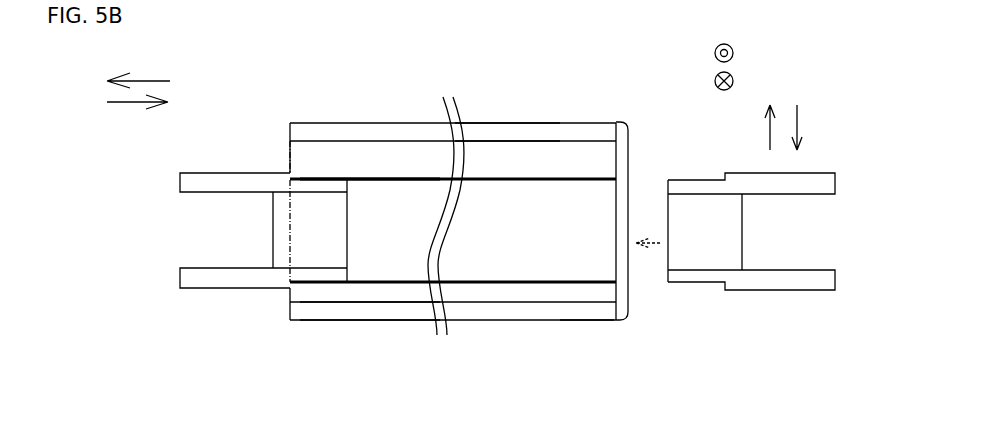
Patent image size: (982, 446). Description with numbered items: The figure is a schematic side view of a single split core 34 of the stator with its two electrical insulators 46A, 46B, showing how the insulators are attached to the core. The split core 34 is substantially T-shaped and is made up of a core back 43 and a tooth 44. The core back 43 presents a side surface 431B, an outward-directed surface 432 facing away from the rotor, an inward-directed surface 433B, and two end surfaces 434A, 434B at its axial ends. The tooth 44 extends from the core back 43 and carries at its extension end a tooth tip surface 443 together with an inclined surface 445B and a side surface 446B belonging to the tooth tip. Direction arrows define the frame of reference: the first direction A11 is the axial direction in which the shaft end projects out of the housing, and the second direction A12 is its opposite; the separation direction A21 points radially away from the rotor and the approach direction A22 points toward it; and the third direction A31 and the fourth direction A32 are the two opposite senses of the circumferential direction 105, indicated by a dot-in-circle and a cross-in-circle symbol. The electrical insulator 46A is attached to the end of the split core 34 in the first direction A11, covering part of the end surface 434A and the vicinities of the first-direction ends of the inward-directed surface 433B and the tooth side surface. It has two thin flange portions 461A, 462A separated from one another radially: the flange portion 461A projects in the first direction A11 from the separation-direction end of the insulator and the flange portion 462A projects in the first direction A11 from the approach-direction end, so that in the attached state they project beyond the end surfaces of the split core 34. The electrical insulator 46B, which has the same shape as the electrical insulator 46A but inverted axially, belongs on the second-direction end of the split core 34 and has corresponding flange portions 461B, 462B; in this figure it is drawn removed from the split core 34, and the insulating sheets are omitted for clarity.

The split core 34 is at (453, 214).
The core back 43 is at (478, 197).
The tooth 44 is at (478, 284).
The side surface 431B is at (490, 150).
The outward-directed surface 432 is at (548, 128).
The inward-directed surface 433B is at (375, 186).
The end surface 434A is at (290, 148).
The end surface 434B is at (622, 122).
The tooth tip surface 443 is at (547, 322).
The inclined surface 445B is at (474, 303).
The side surface 446B is at (597, 312).
The electrical insulator 46A is at (225, 266).
The electrical insulator 46B is at (772, 268).
The flange portion 461A is at (180, 181).
The flange portion 462A is at (180, 278).
The flange portion 461B is at (802, 195).
The flange portion 462B is at (802, 268).
The circumferential direction 105 is at (777, 67).
The first direction A11 is at (130, 82).
The second direction A12 is at (133, 104).
The separation direction A21 is at (768, 127).
The approach direction A22 is at (798, 122).
The third direction A31 is at (749, 55).
The fourth direction A32 is at (749, 83).